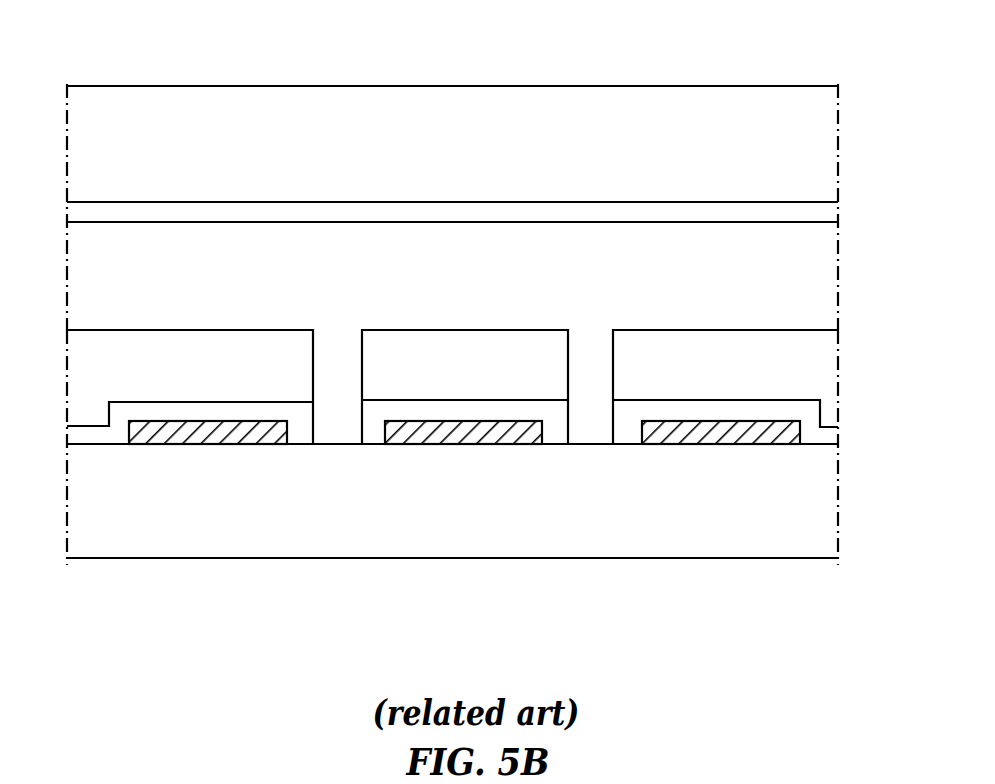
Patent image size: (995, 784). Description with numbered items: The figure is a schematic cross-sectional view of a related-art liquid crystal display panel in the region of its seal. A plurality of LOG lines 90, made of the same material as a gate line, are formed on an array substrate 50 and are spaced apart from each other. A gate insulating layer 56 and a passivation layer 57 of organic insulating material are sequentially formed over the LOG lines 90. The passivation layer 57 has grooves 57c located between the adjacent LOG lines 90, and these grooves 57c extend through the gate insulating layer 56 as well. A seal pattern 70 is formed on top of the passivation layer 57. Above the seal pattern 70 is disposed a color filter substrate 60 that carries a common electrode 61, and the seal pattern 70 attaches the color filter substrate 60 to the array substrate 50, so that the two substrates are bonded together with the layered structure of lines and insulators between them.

The array substrate 50 is at (348, 525).
The gate insulating layer 56 is at (205, 412).
The passivation layer 57 is at (152, 378).
The grooves 57c is at (335, 402).
The color filter substrate 60 is at (673, 140).
The common electrode 61 is at (366, 210).
The seal pattern 70 is at (783, 242).
The LOG lines 90 is at (178, 444).